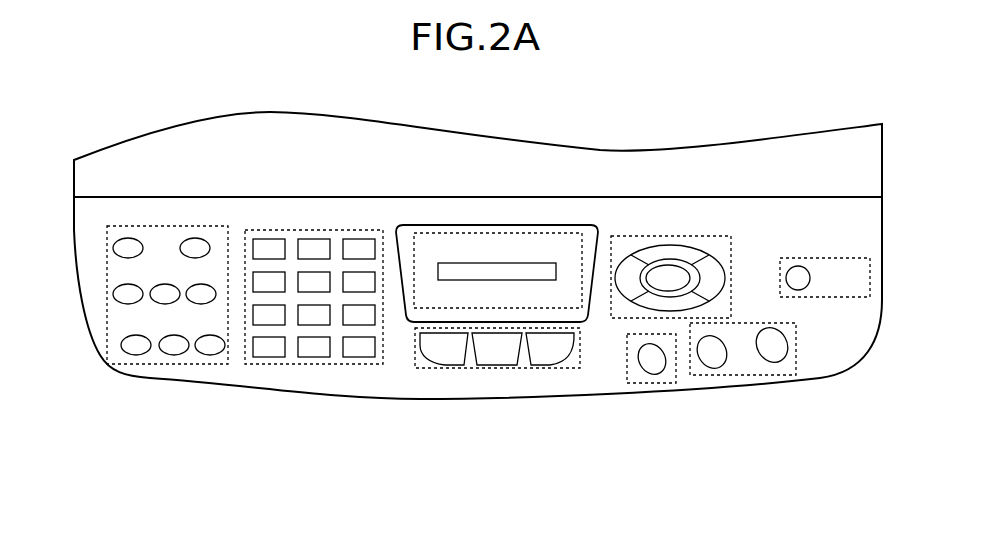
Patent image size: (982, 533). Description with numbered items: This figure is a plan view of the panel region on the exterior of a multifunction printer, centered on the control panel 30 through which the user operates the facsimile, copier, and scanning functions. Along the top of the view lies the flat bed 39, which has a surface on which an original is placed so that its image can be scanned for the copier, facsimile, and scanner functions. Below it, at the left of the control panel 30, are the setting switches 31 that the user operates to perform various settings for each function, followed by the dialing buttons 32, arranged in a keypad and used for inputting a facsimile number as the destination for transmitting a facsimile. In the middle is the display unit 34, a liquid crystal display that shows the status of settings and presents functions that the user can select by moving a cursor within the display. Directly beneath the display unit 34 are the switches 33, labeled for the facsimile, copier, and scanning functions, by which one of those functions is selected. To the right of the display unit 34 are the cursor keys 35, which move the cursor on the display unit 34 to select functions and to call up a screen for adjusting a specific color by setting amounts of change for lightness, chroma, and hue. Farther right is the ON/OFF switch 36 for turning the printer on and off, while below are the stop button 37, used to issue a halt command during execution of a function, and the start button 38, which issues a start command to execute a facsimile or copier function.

The control panel 30 is at (803, 405).
The setting switches 31 is at (203, 365).
The dialing buttons 32 is at (291, 365).
The switches 33 is at (420, 368).
The display unit 34 is at (430, 233).
The cursor keys 35 is at (653, 236).
The ON/OFF switch 36 is at (796, 258).
The stop button 37 is at (650, 384).
The start button 38 is at (731, 375).
The flat bed 39 is at (368, 137).